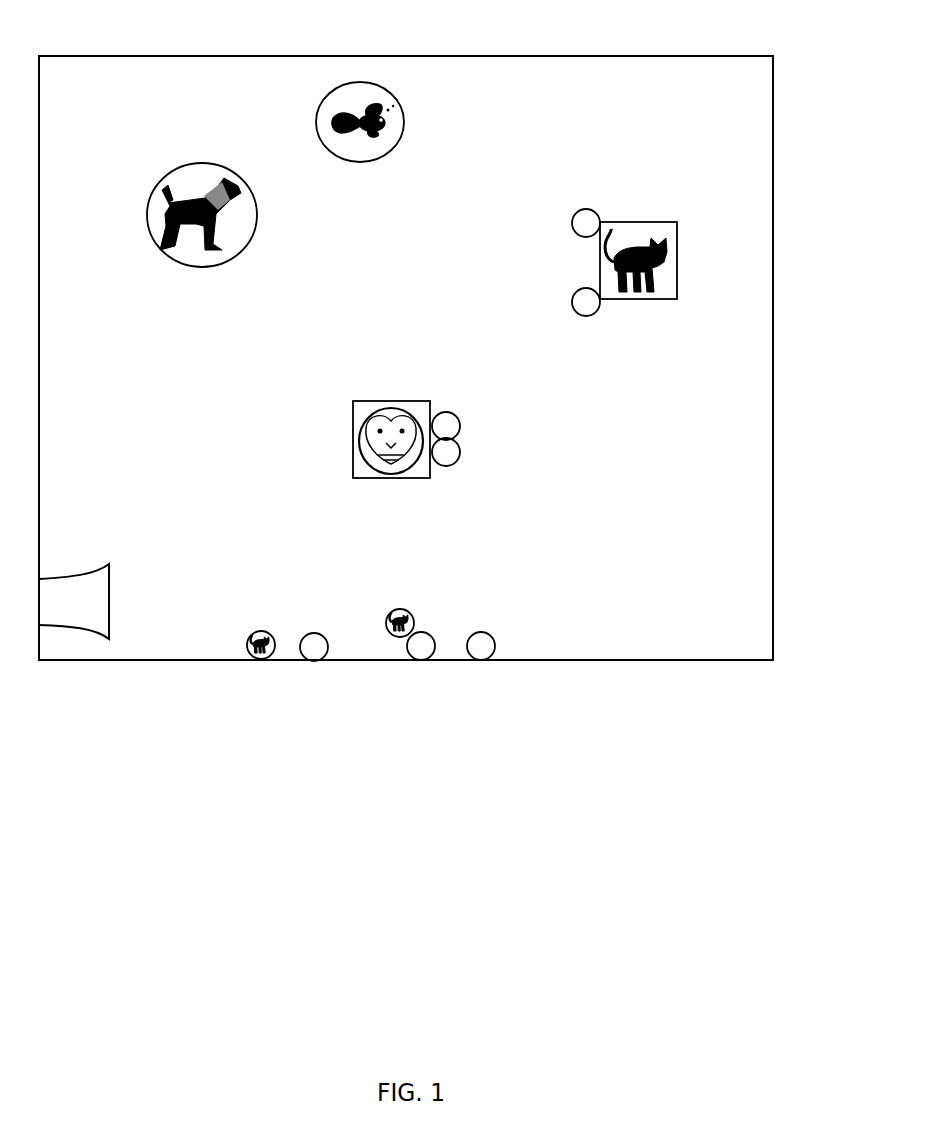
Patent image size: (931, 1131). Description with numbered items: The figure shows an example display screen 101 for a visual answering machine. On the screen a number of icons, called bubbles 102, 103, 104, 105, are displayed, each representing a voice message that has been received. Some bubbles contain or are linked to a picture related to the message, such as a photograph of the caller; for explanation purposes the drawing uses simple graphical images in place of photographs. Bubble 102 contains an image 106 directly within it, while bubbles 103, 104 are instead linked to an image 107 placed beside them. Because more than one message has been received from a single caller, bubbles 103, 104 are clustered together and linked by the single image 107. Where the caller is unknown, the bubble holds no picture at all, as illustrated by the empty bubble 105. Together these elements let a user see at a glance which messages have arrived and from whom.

The display screen 101 is at (680, 56).
The bubble 102 is at (404, 120).
The bubble 103 is at (574, 213).
The bubble 104 is at (592, 315).
The bubble 105 is at (494, 638).
The image 106 is at (338, 118).
The image 107 is at (668, 233).